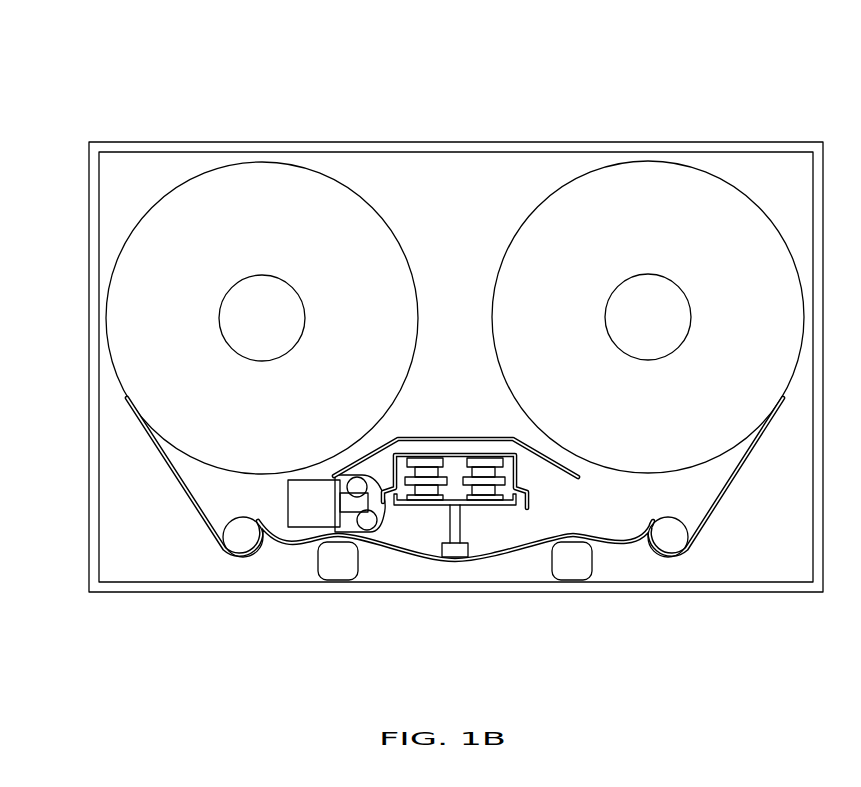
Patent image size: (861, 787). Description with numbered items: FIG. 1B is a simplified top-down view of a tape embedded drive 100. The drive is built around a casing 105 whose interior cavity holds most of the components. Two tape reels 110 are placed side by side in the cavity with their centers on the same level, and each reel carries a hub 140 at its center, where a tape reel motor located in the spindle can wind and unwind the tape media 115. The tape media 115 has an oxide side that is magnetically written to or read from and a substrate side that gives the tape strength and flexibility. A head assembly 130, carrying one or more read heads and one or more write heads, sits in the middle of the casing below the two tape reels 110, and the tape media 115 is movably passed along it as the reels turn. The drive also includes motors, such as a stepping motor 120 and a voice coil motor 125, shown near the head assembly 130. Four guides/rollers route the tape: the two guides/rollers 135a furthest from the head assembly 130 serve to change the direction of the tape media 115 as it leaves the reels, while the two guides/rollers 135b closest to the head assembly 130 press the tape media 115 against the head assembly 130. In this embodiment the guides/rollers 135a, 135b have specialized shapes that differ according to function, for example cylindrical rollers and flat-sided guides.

The tape drive system 100 is at (82, 66).
The casing 105 is at (487, 142).
The tape reels 110 is at (247, 162).
The tape media 115 is at (190, 500).
The stepping motor 120 is at (297, 527).
The voice coil motor (VCM) 125 is at (430, 507).
The head assembly 130 is at (455, 558).
The tape guides/rollers 135a is at (243, 537).
The tape guides/rollers 135b is at (340, 565).
The reel hub 140 is at (292, 288).